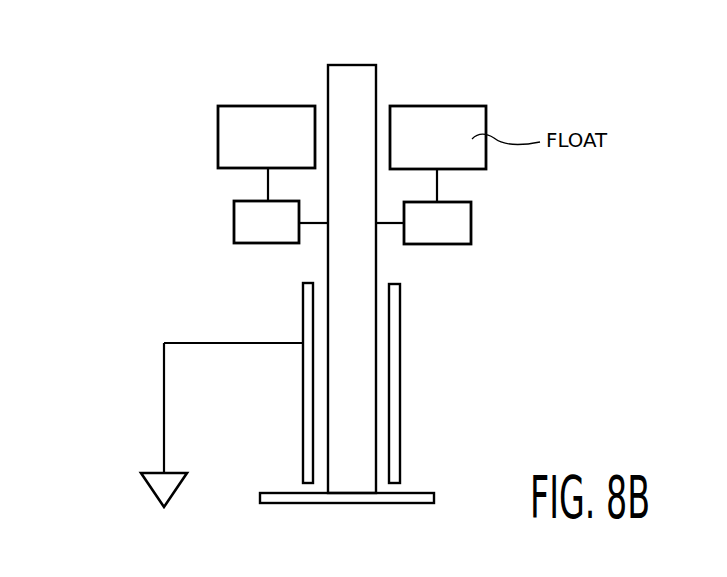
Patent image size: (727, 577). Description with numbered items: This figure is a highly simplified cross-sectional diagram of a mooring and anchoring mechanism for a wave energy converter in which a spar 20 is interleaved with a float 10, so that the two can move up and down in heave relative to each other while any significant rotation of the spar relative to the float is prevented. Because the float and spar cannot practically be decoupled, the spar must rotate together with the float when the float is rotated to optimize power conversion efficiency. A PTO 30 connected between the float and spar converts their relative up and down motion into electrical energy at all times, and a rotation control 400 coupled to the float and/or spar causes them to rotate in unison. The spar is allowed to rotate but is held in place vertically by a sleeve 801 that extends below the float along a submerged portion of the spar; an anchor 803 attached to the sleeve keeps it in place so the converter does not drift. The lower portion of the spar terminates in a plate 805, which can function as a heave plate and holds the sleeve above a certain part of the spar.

The float 10 is at (232, 137).
The spar 20 is at (358, 72).
The PTO 30 is at (471, 225).
The rotation control 400 is at (236, 224).
The sleeve 801 is at (400, 362).
The anchor 803 is at (164, 408).
The plate 805 is at (260, 498).